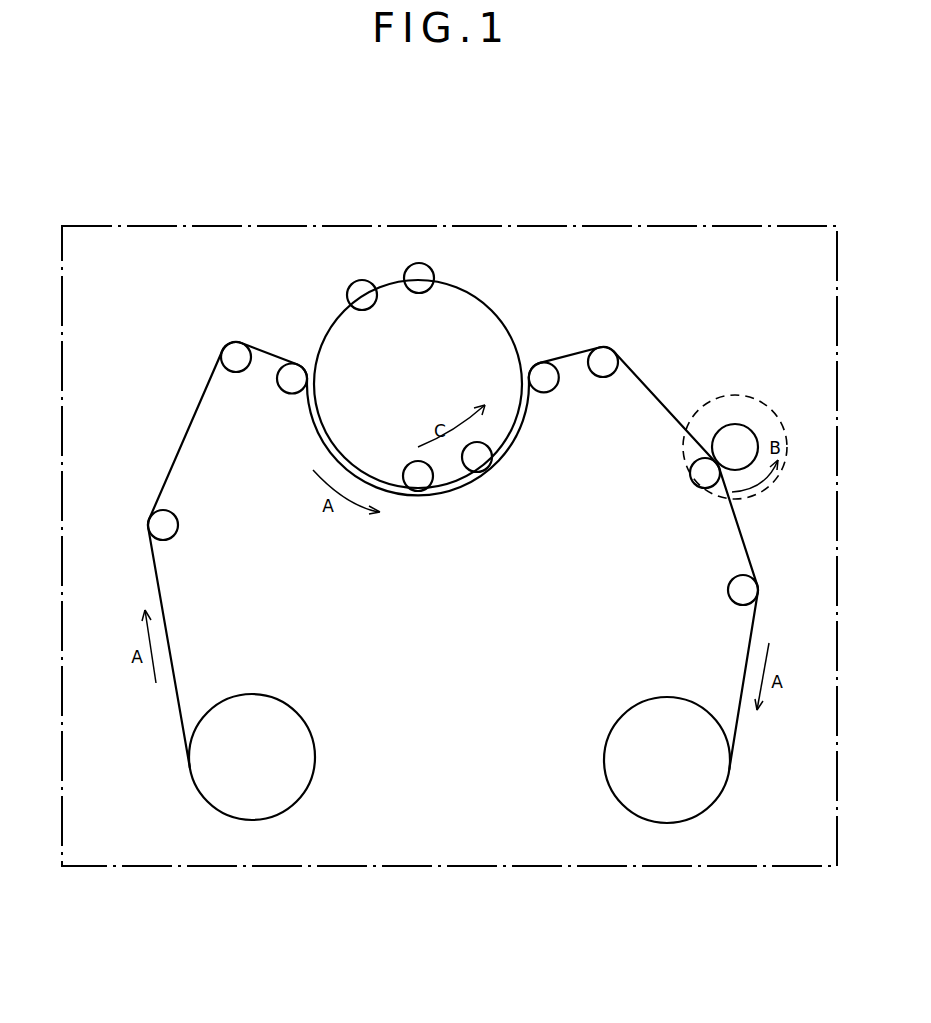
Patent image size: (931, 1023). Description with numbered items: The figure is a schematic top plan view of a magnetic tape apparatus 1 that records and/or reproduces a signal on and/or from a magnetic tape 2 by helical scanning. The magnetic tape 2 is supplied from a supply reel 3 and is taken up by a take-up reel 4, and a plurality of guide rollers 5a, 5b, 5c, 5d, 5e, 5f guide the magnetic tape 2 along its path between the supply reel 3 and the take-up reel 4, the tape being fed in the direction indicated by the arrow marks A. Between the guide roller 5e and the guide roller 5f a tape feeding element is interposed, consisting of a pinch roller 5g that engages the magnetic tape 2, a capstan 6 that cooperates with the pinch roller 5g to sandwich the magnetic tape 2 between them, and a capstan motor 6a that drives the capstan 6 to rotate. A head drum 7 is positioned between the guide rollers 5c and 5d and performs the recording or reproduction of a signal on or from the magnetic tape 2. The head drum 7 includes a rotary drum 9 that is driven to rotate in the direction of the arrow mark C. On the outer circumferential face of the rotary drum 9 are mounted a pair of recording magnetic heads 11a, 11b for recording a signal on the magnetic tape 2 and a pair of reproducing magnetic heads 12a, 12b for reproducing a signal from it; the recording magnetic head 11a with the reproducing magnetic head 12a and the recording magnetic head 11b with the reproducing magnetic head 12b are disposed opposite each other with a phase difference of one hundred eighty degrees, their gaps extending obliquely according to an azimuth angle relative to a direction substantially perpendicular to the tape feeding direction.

The magnetic tape apparatus 1 is at (432, 202).
The magnetic tape 2 is at (197, 398).
The supply reel 3 is at (250, 706).
The take-up reel 4 is at (664, 708).
The guide roller 5a is at (166, 525).
The guide roller 5b is at (236, 352).
The guide roller 5c is at (292, 381).
The guide roller 5d is at (546, 381).
The guide roller 5e is at (603, 366).
The guide roller 5f is at (740, 590).
The pinch roller 5g is at (706, 477).
The capstan 6 is at (733, 437).
The capstan motor 6a is at (757, 395).
The head drum 7 is at (536, 330).
The rotary drum 9 is at (490, 300).
The recording magnetic head 11a is at (478, 461).
The recording magnetic head 11b is at (360, 292).
The reproducing magnetic head 12a is at (418, 480).
The reproducing magnetic head 12b is at (422, 278).